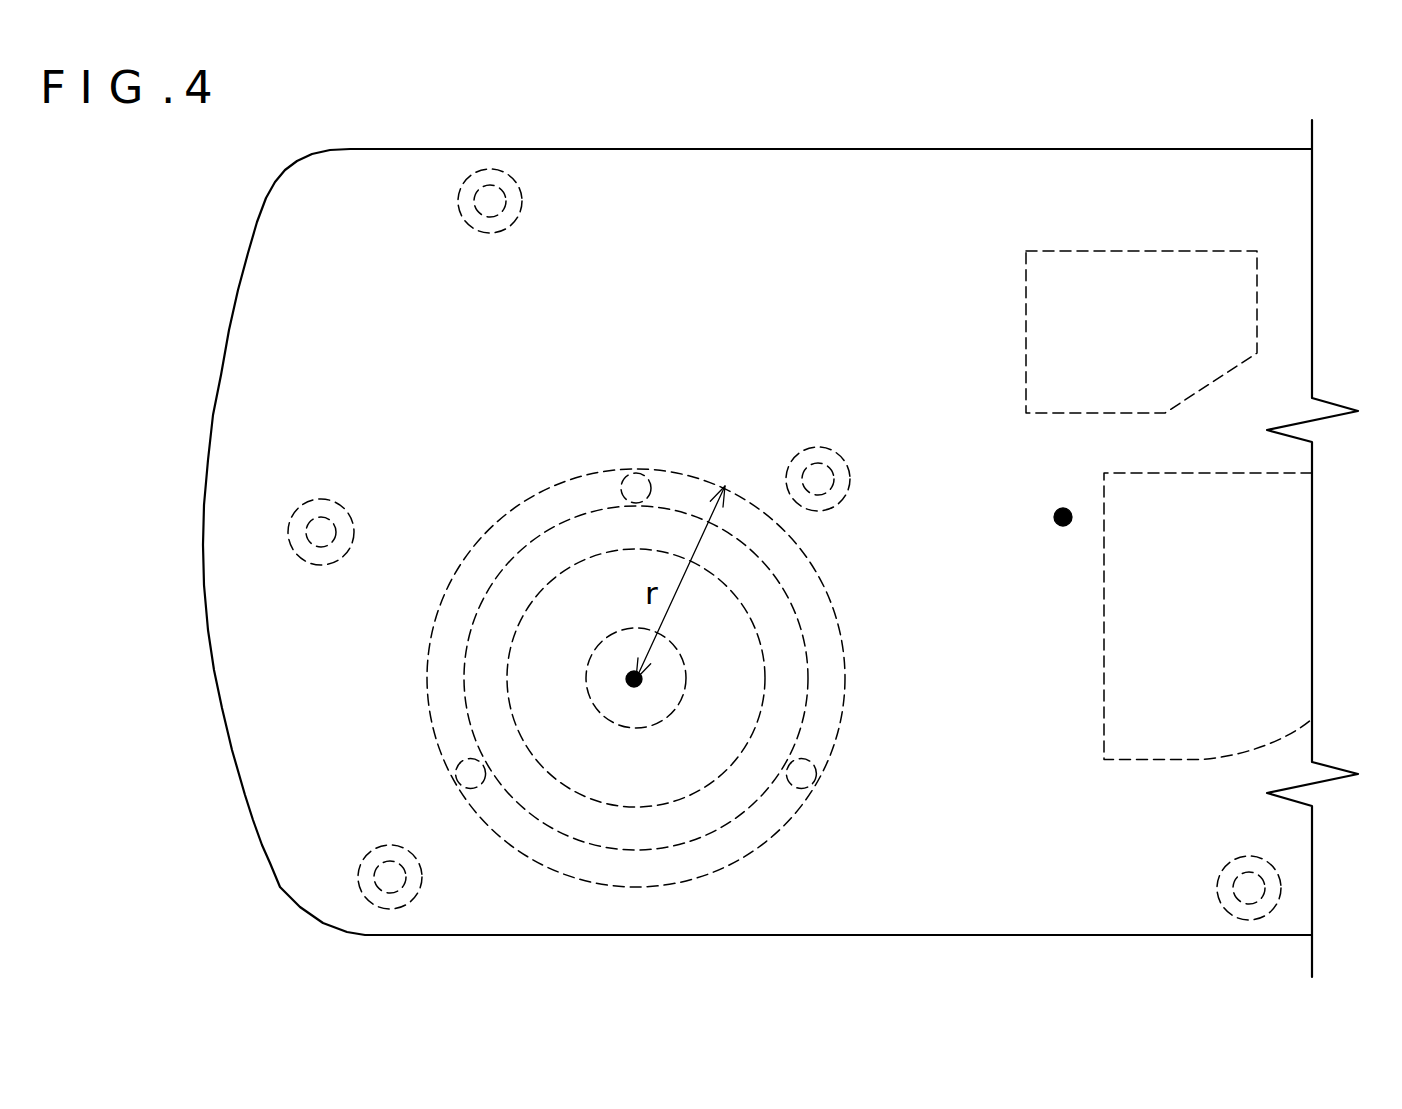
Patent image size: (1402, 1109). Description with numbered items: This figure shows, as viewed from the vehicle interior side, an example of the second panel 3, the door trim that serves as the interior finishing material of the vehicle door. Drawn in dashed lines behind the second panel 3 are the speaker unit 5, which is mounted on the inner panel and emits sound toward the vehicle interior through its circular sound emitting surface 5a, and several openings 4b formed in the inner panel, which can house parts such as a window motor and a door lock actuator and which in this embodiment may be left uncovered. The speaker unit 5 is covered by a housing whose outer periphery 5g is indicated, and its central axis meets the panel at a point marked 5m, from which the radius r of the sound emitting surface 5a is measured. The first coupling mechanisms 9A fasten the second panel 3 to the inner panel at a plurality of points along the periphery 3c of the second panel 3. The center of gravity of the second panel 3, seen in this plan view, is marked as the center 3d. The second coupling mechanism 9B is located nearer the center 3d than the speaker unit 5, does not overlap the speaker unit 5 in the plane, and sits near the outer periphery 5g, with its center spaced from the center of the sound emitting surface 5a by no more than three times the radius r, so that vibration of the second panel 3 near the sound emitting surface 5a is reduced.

The second panel 3 is at (287, 203).
The periphery of the second panel 3c is at (233, 327).
The center of the second panel 3d is at (1072, 518).
The openings 4b is at (1180, 363).
The speaker unit 5 is at (543, 553).
The sound emitting surface 5a is at (520, 678).
The outer periphery of the housing 5g is at (825, 652).
The center of speaker unit 5m is at (644, 679).
The first coupling mechanisms 9A is at (522, 205).
The second coupling mechanism 9B is at (848, 483).